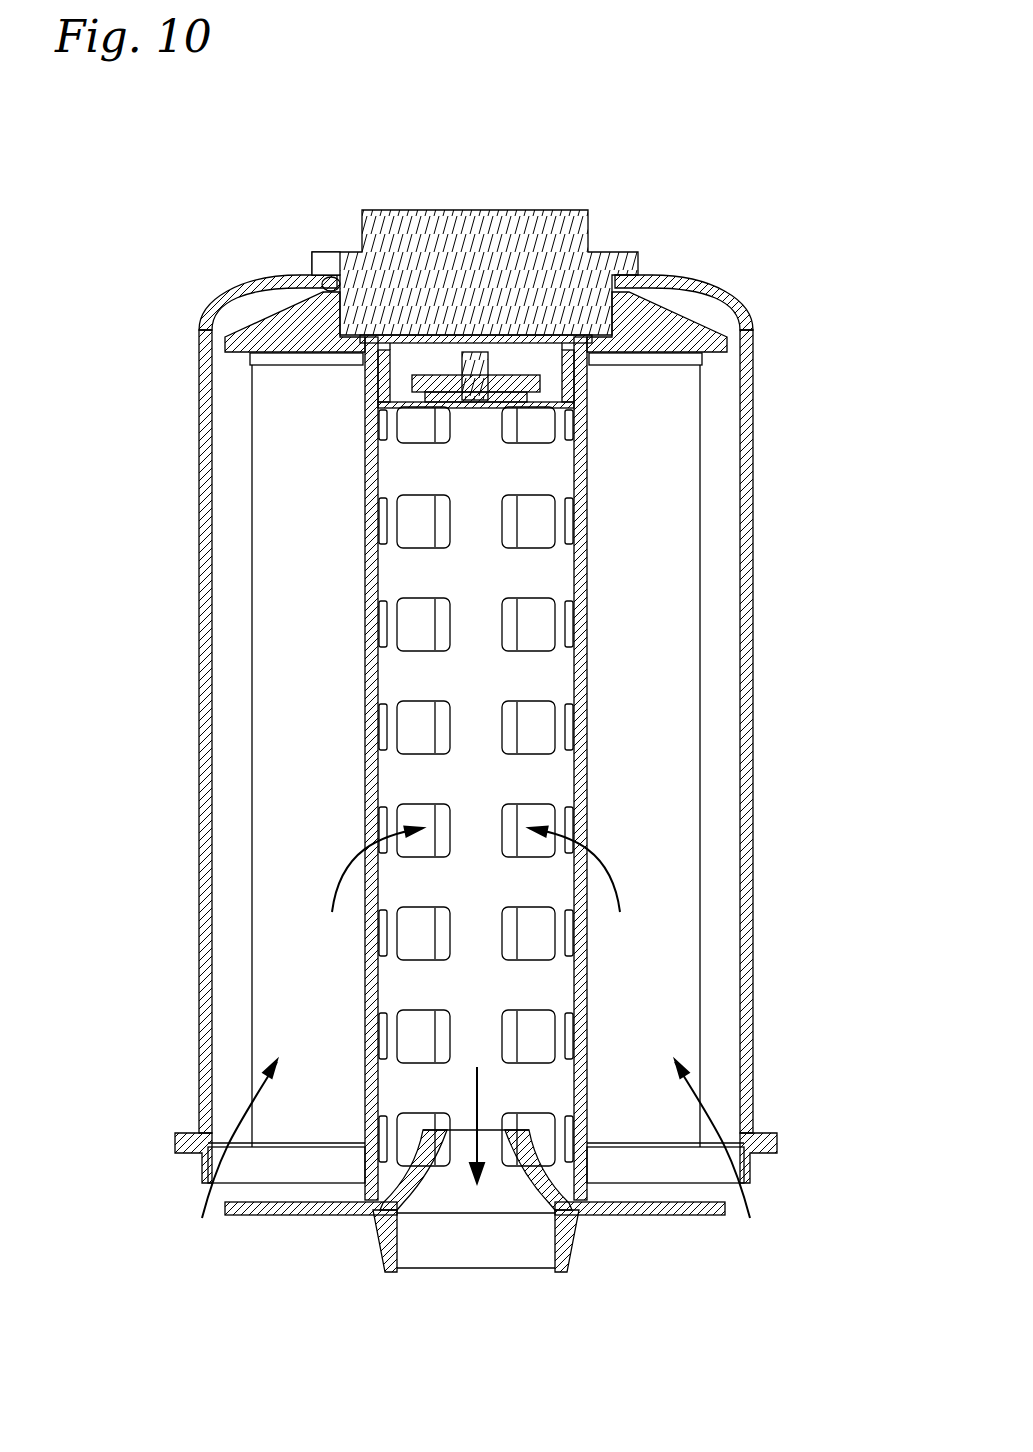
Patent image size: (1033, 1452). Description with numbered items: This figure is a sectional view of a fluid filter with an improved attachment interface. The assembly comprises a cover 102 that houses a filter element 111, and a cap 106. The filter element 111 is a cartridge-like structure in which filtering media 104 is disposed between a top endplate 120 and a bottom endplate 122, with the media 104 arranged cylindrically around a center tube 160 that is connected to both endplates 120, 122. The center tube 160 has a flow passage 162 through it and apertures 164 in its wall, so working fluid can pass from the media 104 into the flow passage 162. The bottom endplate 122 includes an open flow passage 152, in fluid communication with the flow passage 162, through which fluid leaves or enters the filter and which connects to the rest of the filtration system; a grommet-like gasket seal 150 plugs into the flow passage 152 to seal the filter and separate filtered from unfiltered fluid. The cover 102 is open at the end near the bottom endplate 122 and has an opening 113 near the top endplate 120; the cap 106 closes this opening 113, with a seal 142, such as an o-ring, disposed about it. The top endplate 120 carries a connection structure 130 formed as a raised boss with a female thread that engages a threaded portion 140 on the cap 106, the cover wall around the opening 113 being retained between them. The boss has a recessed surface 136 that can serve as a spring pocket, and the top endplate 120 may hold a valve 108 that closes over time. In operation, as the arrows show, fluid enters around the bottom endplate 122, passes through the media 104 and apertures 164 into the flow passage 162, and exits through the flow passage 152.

The cover 102 is at (755, 550).
The filtering media 104 is at (672, 625).
The cap 106 is at (590, 250).
The valve 108 is at (470, 350).
The filter element 111 is at (252, 430).
The opening 113 is at (333, 273).
The top endplate 120 is at (690, 320).
The bottom endplate 122 is at (247, 1215).
The connection structure 130 is at (600, 310).
The recessed surface 136 is at (560, 370).
The threaded portion 140 is at (320, 298).
The seal 142 is at (322, 290).
The gasket seal 150 is at (377, 1255).
The flow passage 152 is at (403, 1237).
The center tube 160 is at (367, 558).
The flow passage 162 is at (440, 568).
The apertures 164 is at (420, 720).